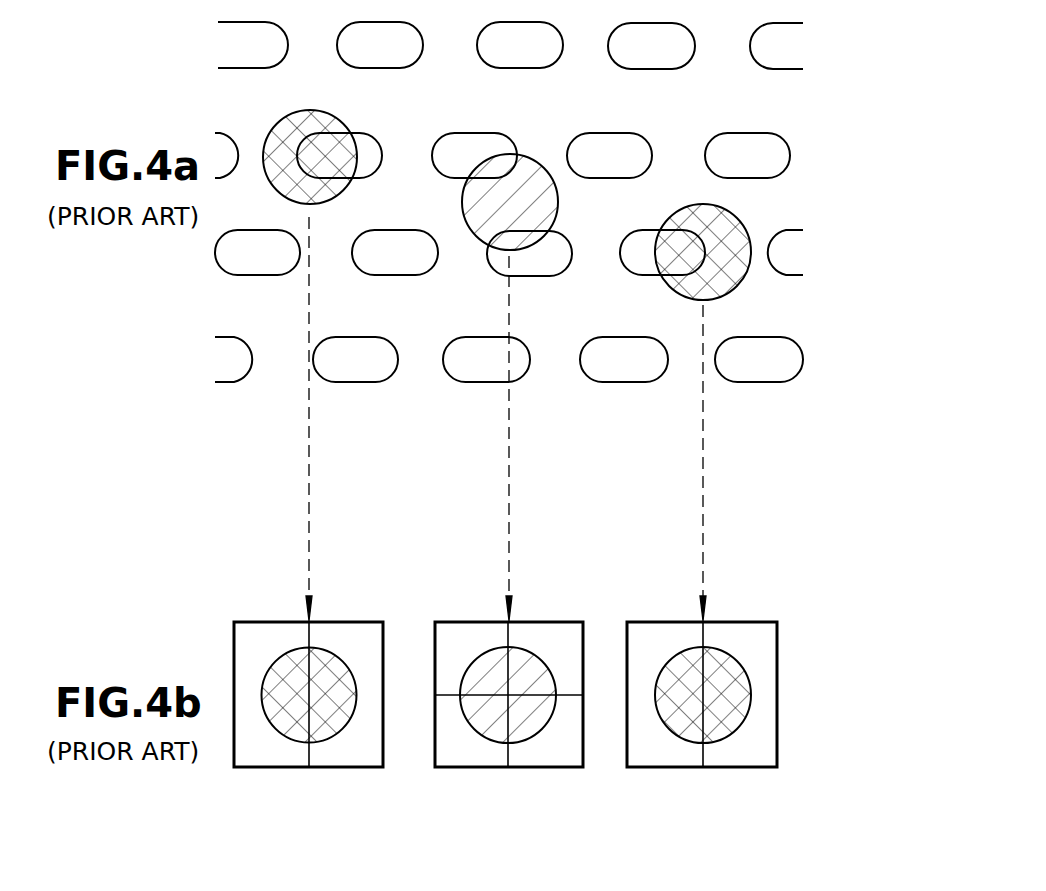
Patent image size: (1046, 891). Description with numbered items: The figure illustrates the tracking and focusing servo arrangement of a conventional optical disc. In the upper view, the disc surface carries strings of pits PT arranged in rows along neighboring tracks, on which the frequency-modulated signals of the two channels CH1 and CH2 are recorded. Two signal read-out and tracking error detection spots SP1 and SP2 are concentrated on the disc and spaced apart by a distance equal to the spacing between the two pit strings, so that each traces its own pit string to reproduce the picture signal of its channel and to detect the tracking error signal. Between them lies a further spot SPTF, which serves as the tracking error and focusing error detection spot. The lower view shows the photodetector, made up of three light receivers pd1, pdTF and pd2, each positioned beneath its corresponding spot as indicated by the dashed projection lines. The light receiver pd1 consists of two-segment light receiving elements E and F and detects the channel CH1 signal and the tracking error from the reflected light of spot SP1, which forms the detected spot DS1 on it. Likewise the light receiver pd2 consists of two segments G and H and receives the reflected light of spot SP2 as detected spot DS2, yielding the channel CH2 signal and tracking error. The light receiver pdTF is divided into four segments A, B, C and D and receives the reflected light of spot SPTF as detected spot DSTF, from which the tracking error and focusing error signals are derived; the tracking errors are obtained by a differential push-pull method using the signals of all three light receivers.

In FIG. 4A, the pit strings PT is at (625, 138).
In FIG. 4A, the signal read-out and tracking error detection spot SP2 is at (335, 128).
In FIG. 4A, the tracking error and focusing error detection spot SPTF is at (538, 205).
In FIG. 4A, the signal read-out and tracking error detection spot SP1 is at (730, 225).
In FIG. 4B, the light receiver pd2 is at (328, 750).
In FIG. 4B, the second detected spot DS2 is at (273, 695).
In FIG. 4B, the light receiver pdTF is at (520, 753).
In FIG. 4B, the detected spot in transition field DSTF is at (487, 728).
In FIG. 4B, the light receiver pd1 is at (722, 755).
In FIG. 4B, the first detected spot DS1 is at (745, 705).